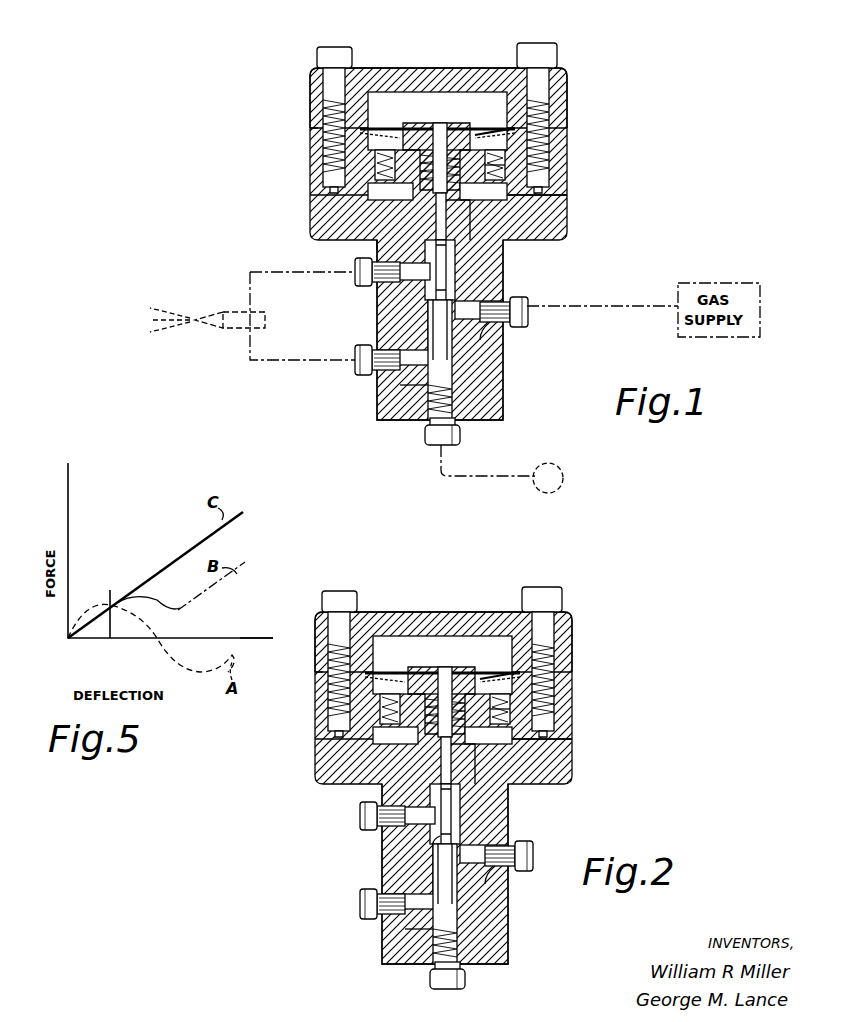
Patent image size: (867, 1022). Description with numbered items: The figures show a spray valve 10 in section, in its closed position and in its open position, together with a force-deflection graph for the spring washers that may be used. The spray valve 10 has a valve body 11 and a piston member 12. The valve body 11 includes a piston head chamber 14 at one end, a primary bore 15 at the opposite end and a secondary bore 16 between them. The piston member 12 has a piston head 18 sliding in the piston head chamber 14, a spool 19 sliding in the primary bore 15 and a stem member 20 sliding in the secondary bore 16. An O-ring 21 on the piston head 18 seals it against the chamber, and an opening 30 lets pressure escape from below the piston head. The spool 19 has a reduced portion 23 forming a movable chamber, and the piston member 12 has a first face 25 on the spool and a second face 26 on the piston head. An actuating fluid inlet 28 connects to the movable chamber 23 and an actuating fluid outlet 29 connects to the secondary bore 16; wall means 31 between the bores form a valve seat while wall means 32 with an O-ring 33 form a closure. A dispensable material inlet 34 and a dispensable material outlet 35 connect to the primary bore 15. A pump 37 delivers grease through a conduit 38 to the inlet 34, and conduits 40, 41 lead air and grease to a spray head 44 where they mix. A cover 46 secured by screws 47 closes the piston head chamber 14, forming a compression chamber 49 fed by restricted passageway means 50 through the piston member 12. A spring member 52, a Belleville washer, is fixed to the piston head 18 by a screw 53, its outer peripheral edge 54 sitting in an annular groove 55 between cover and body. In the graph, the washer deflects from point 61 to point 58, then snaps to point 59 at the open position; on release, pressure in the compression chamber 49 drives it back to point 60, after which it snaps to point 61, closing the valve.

In FIG. 1, the spray valve 10 is at (258, 106).
In FIG. 2, the spray valve 10 is at (277, 723).
In FIG. 1, the valve body 11 is at (310, 188).
In FIG. 2, the valve body 11 is at (423, 788).
In FIG. 1, the piston member 12 is at (503, 262).
In FIG. 2, the piston member 12 is at (482, 755).
In FIG. 1, the piston head chamber 14 is at (390, 194).
In FIG. 2, the piston head chamber 14 is at (395, 736).
In FIG. 1, the primary bore 15 is at (455, 378).
In FIG. 2, the primary bore 15 is at (486, 938).
In FIG. 1, the secondary bore 16 is at (377, 246).
In FIG. 1, the piston head 18 is at (470, 194).
In FIG. 2, the piston head 18 is at (488, 736).
In FIG. 1, the spool 19 is at (452, 352).
In FIG. 2, the spool 19 is at (486, 904).
In FIG. 1, the stem member 20 is at (470, 222).
In FIG. 2, the stem member 20 is at (506, 772).
In FIG. 1, the O-ring 21 is at (505, 166).
In FIG. 2, the O-ring 21 is at (547, 722).
In FIG. 1, the reduced portion 23 is at (430, 322).
In FIG. 2, the reduced portion 23 is at (394, 869).
In FIG. 1, the first face 25 is at (400, 390).
In FIG. 2, the first face 25 is at (392, 940).
In FIG. 1, the second face 26 is at (500, 130).
In FIG. 2, the second face 26 is at (500, 663).
In FIG. 1, the actuating fluid inlet 28 is at (495, 326).
In FIG. 2, the actuating fluid inlet 28 is at (517, 878).
In FIG. 1, the actuating fluid outlet 29 is at (378, 286).
In FIG. 2, the actuating fluid outlet 29 is at (376, 824).
In FIG. 1, the opening 30 is at (567, 196).
In FIG. 2, the opening 30 is at (564, 752).
In FIG. 1, the wall means 31 is at (512, 300).
In FIG. 2, the wall means 31 is at (511, 846).
In FIG. 2, the wall means 32 is at (393, 848).
In FIG. 1, the O-ring 33 is at (460, 287).
In FIG. 2, the O-ring 33 is at (507, 834).
In FIG. 1, the dispensable material inlet 34 is at (425, 436).
In FIG. 2, the dispensable material inlet 34 is at (469, 975).
In FIG. 1, the dispensable material outlet 35 is at (378, 376).
In FIG. 2, the dispensable material outlet 35 is at (378, 902).
In FIG. 1, the pump 37 is at (562, 487).
In FIG. 1, the conduit 38 is at (495, 478).
In FIG. 1, the conduit 40 is at (355, 274).
In FIG. 2, the conduit 40 is at (351, 816).
In FIG. 1, the conduit 41 is at (355, 362).
In FIG. 2, the conduit 41 is at (363, 912).
In FIG. 1, the spray head 44 is at (238, 332).
In FIG. 1, the cover 46 is at (420, 68).
In FIG. 2, the cover 46 is at (443, 625).
In FIG. 1, the screws 47 is at (340, 47).
In FIG. 2, the screws 47 is at (460, 653).
In FIG. 1, the compression chamber 49 is at (383, 128).
In FIG. 2, the compression chamber 49 is at (445, 683).
In FIG. 1, the restricted passageway means 50 is at (370, 320).
In FIG. 2, the restricted passageway means 50 is at (414, 874).
In FIG. 1, the spring member 52 is at (470, 128).
In FIG. 2, the spring member 52 is at (443, 689).
In FIG. 1, the screw 53 is at (440, 125).
In FIG. 2, the screw 53 is at (442, 633).
In FIG. 1, the outer peripheral edge 54 is at (385, 130).
In FIG. 2, the outer peripheral edge 54 is at (442, 664).
In FIG. 1, the annular groove 55 is at (330, 140).
In FIG. 2, the annular groove 55 is at (401, 675).
In FIG. 5, the point 58 is at (110, 608).
In FIG. 5, the point 59 is at (243, 640).
In FIG. 5, the point 60 is at (190, 672).
In FIG. 5, the point 61 is at (68, 640).